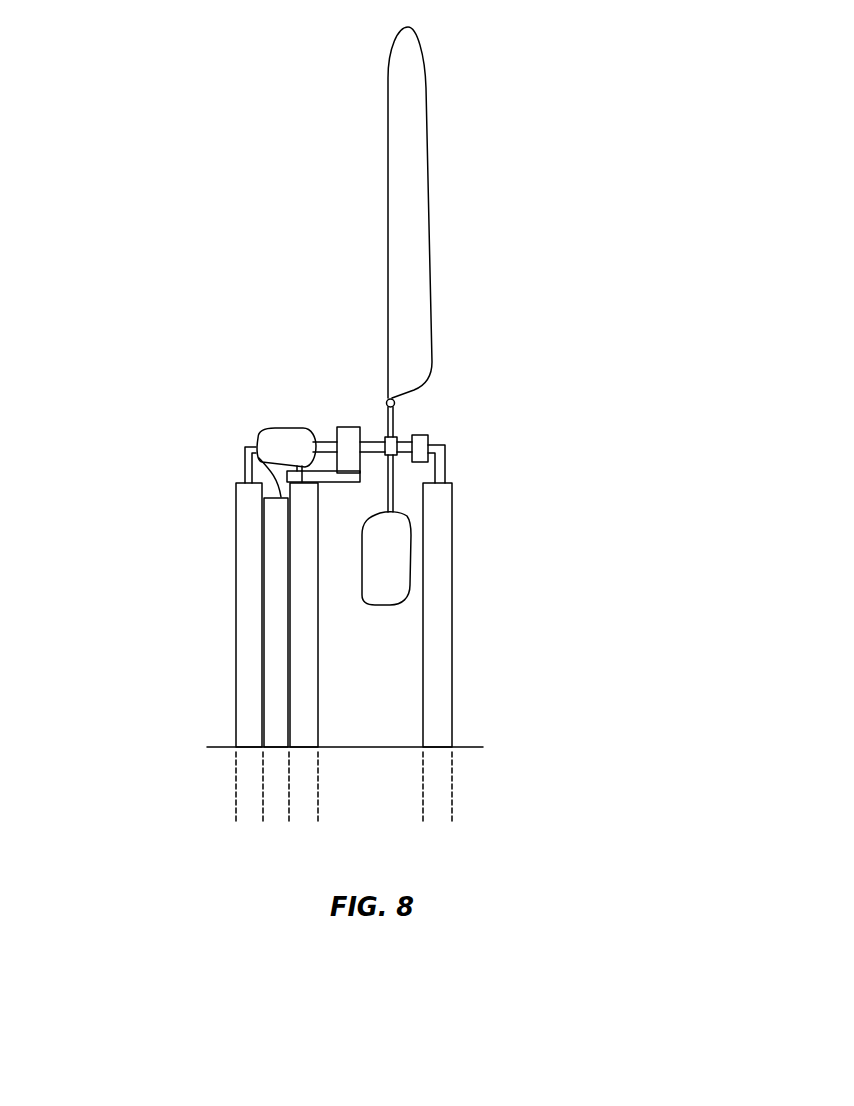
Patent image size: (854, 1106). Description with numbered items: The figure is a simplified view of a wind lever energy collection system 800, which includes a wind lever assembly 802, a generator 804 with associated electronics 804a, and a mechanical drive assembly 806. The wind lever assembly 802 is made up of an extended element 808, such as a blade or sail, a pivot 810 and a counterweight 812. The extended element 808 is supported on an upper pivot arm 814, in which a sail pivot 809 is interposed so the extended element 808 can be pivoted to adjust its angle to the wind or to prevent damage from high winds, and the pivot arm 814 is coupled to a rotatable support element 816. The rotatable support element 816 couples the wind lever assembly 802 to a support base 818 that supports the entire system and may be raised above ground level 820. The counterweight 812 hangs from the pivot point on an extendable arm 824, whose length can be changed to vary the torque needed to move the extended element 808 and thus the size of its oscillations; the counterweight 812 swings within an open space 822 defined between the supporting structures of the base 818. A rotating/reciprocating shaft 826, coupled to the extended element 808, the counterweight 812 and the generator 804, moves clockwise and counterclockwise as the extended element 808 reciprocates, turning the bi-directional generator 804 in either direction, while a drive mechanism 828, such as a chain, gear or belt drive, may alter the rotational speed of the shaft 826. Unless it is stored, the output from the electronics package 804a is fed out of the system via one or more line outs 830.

The wind lever energy collection system 800 is at (612, 322).
The wind lever assembly 802 is at (107, 71).
The generator 804 is at (266, 421).
The associated electronics 804a is at (266, 530).
The mechanical drive assembly 806 is at (370, 305).
The extended element 808 is at (430, 145).
The sail pivot 809 is at (408, 399).
The pivot 810 is at (385, 458).
The counterweight 812 is at (412, 577).
The pivot arm 814 is at (397, 431).
The rotatable support element 816 is at (398, 437).
The support base 818 is at (250, 670).
The ground level 820 is at (470, 747).
The open space 822 is at (395, 630).
The extendable arm 824 is at (407, 477).
The rotating/reciprocating shaft 826 is at (366, 440).
The drive mechanism 828 is at (340, 418).
The line outs 830 is at (273, 558).